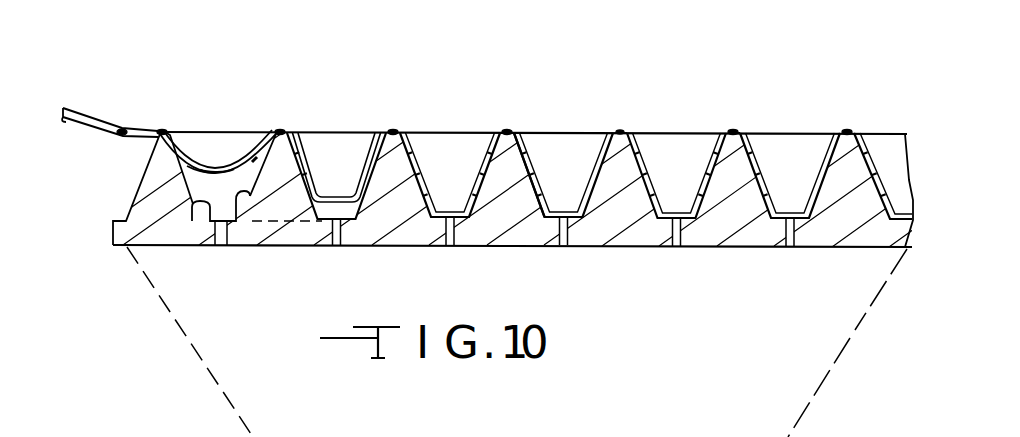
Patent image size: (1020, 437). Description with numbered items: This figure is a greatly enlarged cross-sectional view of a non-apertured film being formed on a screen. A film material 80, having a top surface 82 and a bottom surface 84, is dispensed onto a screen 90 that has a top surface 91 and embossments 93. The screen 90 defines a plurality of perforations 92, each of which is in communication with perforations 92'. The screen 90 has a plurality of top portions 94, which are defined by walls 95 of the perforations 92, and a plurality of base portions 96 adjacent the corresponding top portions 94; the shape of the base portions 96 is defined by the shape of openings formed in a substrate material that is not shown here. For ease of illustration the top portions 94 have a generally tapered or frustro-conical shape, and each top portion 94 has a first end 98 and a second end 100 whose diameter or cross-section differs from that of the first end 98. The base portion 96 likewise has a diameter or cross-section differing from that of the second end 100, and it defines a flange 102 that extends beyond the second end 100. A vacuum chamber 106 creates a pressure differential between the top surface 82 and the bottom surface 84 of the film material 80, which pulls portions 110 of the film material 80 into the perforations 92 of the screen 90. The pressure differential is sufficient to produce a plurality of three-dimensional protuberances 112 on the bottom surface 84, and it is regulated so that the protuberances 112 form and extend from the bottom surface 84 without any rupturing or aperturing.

The film material 80 is at (103, 112).
The top surface 82 is at (122, 130).
The bottom surface 84 is at (86, 116).
The screen 90 is at (154, 177).
The top surface 91 is at (222, 150).
The perforations 92 is at (448, 106).
The perforations 92' is at (504, 267).
The embossments 93 is at (737, 133).
The top portions 94 is at (532, 156).
The walls 95 is at (248, 222).
The base portions 96 is at (158, 235).
The first end 98 is at (277, 132).
The second end 100 is at (327, 195).
The flange 102 is at (194, 222).
The vacuum chamber 106 is at (542, 411).
The portions 110 is at (336, 193).
The protuberances 112 is at (453, 195).